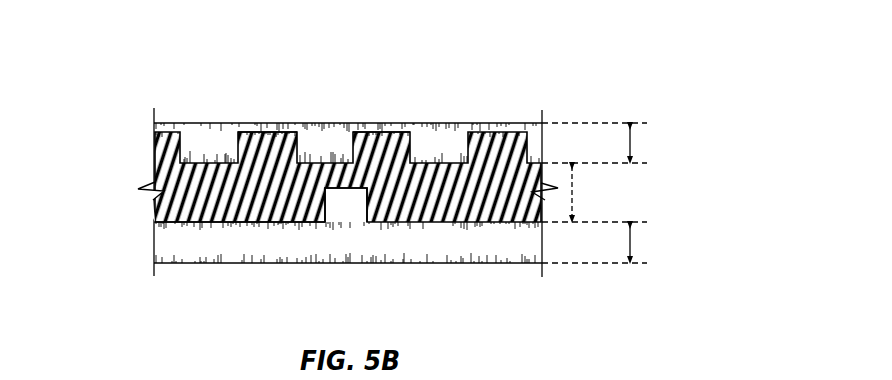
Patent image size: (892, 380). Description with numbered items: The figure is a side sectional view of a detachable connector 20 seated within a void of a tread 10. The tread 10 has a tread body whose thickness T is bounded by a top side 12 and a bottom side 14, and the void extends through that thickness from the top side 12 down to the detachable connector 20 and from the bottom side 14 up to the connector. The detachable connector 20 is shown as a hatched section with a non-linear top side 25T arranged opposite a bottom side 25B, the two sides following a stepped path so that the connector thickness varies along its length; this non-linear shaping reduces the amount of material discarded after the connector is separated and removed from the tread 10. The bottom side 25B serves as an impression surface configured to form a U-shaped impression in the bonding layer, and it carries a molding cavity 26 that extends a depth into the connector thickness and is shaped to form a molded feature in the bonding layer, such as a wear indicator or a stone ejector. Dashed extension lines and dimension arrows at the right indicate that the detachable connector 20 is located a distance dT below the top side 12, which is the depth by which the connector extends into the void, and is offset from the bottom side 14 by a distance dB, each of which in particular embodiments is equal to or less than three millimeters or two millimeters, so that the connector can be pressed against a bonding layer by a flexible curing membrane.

The tread 10 is at (139, 70).
The top side 12 is at (488, 122).
The bottom side 14 is at (483, 264).
The detachable connector 20 is at (161, 146).
The non-linear top side 25T is at (320, 163).
The bottom side 25B is at (205, 223).
The molding cavity 26 is at (327, 210).
The distance from the top side dT is at (630, 143).
The thickness T is at (577, 207).
The distance from the bottom side dB is at (630, 245).